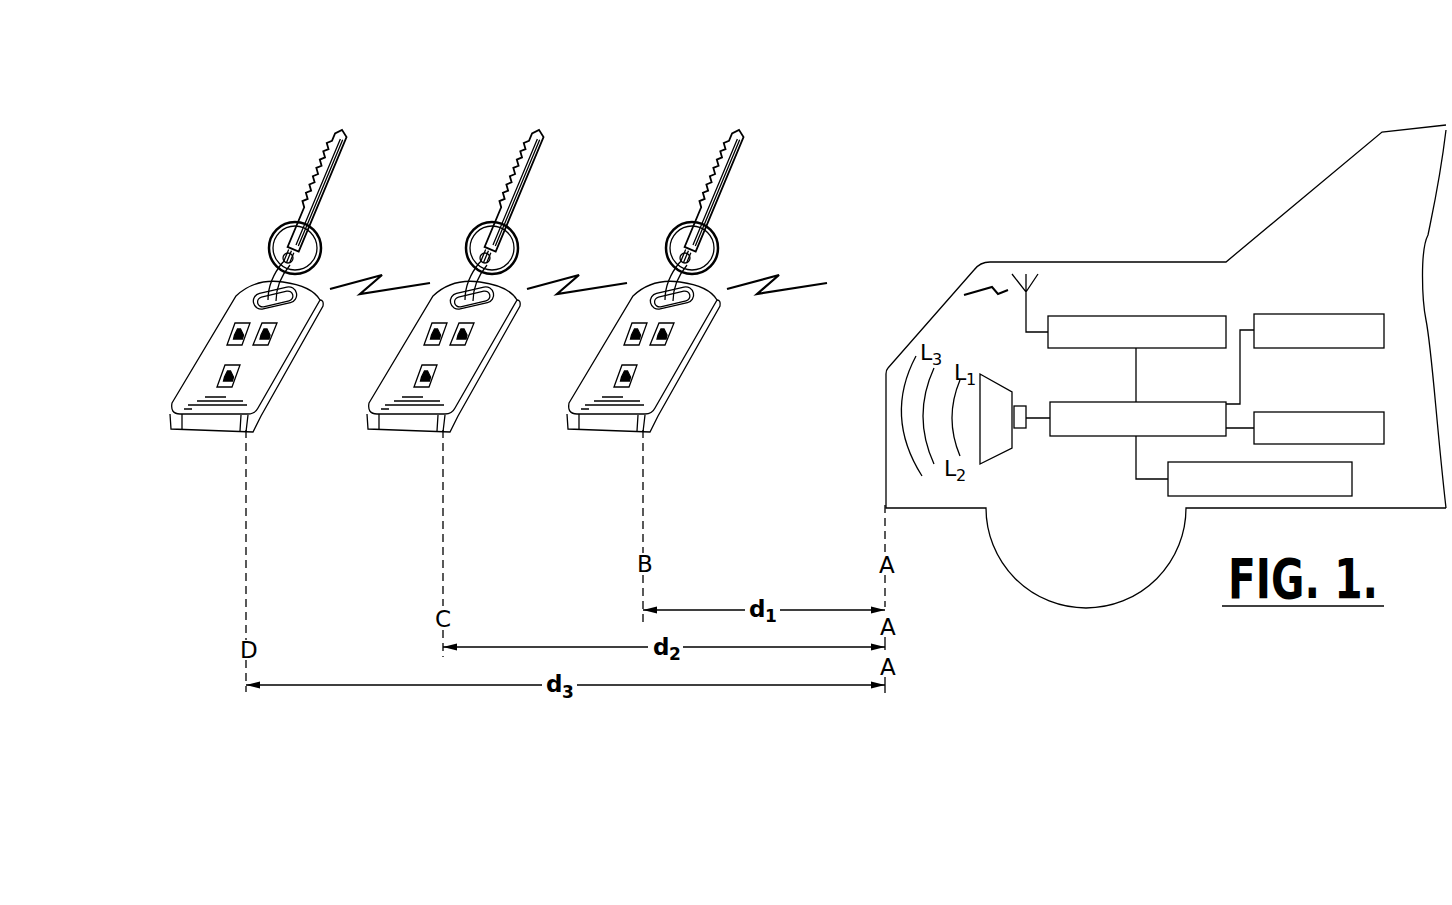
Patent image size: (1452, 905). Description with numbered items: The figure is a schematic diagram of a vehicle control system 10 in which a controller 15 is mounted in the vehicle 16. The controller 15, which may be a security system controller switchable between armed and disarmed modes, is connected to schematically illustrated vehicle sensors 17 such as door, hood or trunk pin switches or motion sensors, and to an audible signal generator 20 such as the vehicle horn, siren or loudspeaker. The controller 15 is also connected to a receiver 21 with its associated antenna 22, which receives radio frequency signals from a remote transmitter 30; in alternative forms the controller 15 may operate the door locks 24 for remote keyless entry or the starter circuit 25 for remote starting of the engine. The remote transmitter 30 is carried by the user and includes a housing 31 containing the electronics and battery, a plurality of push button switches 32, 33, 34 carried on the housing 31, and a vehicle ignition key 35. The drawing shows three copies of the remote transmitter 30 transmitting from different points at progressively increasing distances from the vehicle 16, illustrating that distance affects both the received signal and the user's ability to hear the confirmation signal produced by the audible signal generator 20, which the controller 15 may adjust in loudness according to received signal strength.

The vehicle control system 10 is at (1101, 96).
The controller 15 is at (1202, 402).
The vehicle 16 is at (1294, 206).
The vehicle sensors 17 is at (1304, 410).
The audible signal generator 20 is at (994, 452).
The receiver 21 is at (1198, 314).
The antenna 22 is at (1036, 308).
The door locks 24 is at (1354, 474).
The starter circuit 25 is at (1336, 348).
The remote transmitter 30 is at (206, 329).
The housing 31 is at (210, 430).
The push button switch 32 is at (229, 334).
The push button switch 33 is at (273, 336).
The push button switch 34 is at (224, 372).
The vehicle ignition key 35 is at (303, 200).